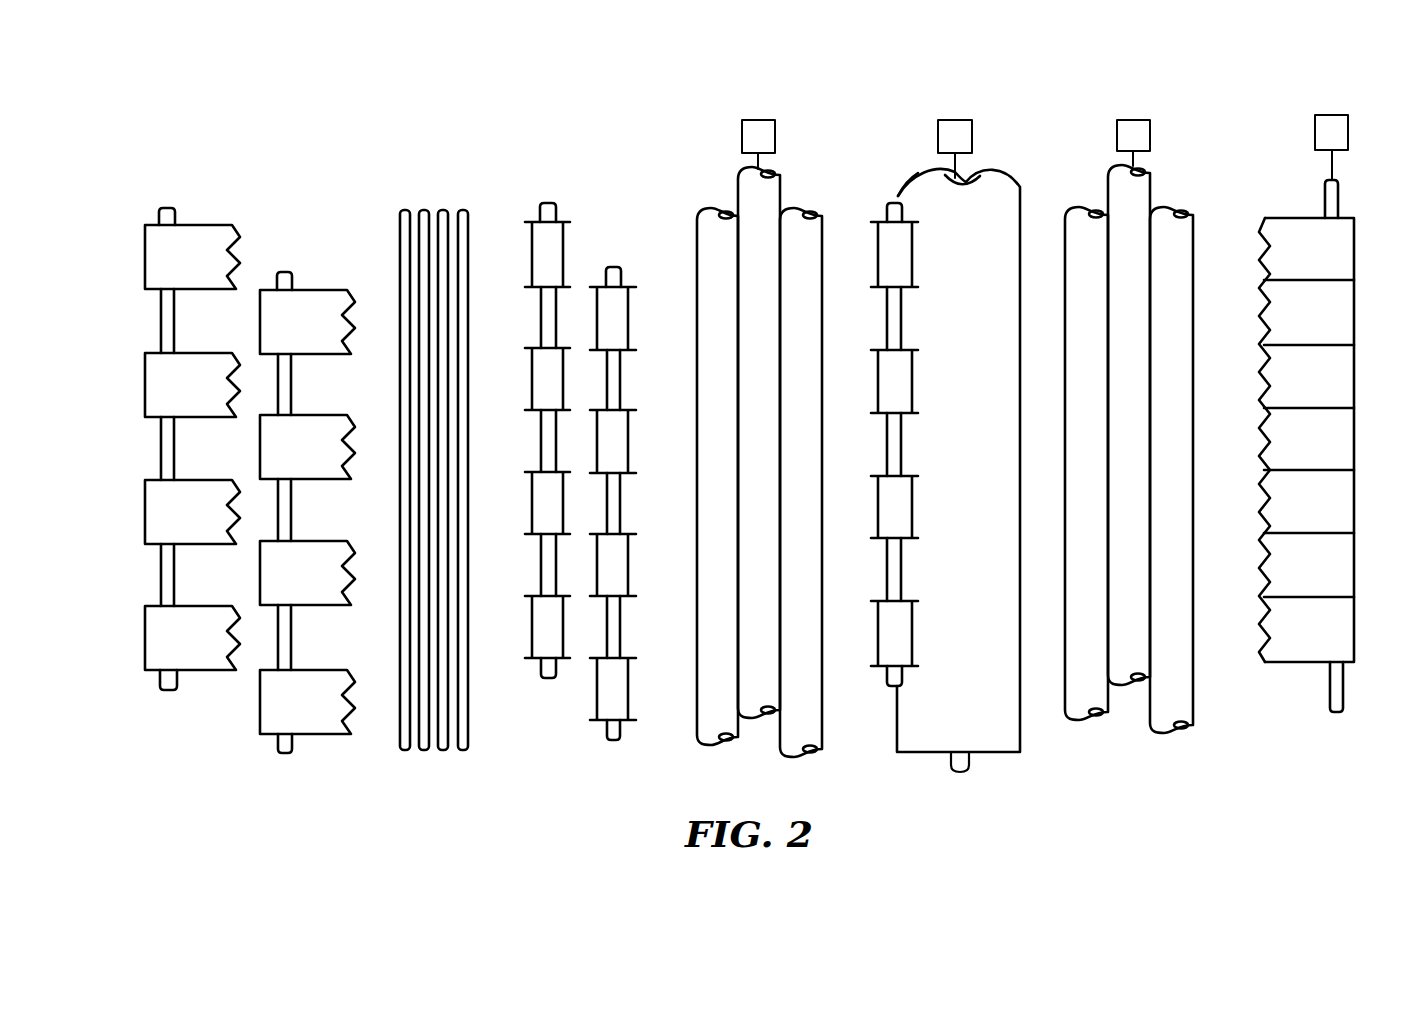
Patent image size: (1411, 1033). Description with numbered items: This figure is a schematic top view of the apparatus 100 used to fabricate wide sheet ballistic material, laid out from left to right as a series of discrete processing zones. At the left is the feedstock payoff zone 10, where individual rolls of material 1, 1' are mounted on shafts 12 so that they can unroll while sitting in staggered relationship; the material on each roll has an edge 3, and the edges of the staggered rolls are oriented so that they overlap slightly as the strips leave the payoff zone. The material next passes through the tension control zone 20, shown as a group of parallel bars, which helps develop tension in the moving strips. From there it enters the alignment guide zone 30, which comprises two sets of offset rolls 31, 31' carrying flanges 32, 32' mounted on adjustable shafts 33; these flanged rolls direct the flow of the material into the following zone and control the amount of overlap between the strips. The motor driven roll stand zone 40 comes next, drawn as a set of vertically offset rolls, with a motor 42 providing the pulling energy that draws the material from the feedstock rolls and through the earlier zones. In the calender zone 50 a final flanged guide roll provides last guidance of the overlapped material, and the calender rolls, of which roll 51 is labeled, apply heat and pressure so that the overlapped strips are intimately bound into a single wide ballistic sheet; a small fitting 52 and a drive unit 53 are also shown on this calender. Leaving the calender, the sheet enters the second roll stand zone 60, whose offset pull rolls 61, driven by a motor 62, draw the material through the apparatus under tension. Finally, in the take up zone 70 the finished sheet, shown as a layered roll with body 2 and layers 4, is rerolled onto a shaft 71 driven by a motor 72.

The apparatus 100 is at (226, 796).
The feedstock payoff zone 10 is at (338, 130).
The roll of material 1 is at (207, 449).
The staggered roll of material 1' is at (322, 512).
The edge 3 is at (201, 225).
The shaft 12 is at (163, 207).
The tension control zone 20 is at (485, 112).
The alignment guide zone 30 is at (636, 112).
The offset roll 31 is at (721, 440).
The offset roll 31' is at (639, 522).
The flange 32 is at (721, 224).
The flange 32' is at (639, 305).
The adjustable shaft 33 is at (546, 203).
The motor driven roll stand zone 40 is at (822, 112).
The motor 42 is at (742, 136).
The calender zone 50 is at (1020, 112).
The calender roll 51 is at (893, 203).
The drum outlet 52 is at (960, 770).
The drum motor 53 is at (974, 137).
The motor driven roll stand zone 60 is at (1198, 112).
The pull roll 61 is at (1110, 189).
The motor 62 is at (1152, 135).
The take up stand zone 70 is at (1368, 112).
The wound roll 2 is at (1287, 225).
The roll layer 4 is at (1287, 280).
The take-up shaft 71 is at (1341, 197).
The take-up motor 72 is at (1315, 134).